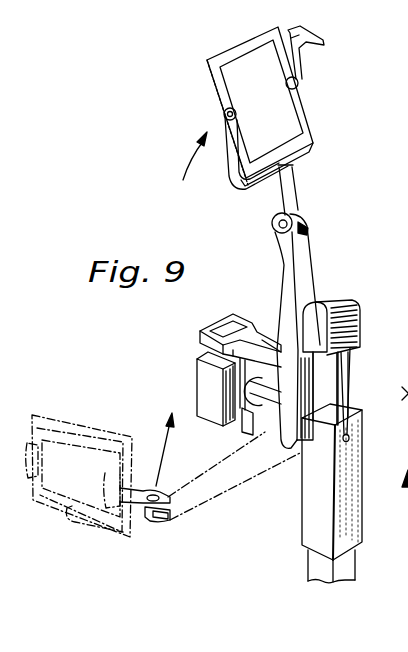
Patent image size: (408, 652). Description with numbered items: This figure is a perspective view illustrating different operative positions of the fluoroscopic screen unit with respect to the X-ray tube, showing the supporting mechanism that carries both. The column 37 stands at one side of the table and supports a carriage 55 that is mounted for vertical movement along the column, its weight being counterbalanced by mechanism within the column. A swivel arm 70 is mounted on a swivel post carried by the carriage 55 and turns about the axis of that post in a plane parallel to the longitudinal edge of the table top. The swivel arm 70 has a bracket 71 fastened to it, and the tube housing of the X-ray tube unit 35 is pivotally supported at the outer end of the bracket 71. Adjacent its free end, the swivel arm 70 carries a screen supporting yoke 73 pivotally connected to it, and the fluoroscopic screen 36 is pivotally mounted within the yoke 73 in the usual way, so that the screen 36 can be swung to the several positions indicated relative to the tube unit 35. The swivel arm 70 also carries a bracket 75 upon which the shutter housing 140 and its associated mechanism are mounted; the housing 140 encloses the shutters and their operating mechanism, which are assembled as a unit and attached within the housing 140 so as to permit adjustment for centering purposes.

The fluoroscopic screen 36 is at (243, 60).
The screen supporting yoke 73 is at (297, 185).
The swivel arm 70 is at (311, 262).
The bracket 75 is at (265, 338).
The housing 140 is at (202, 332).
The X-ray tube unit 35 is at (195, 375).
The bracket 71 is at (260, 408).
The column 37 is at (339, 367).
The carriage 55 is at (357, 445).